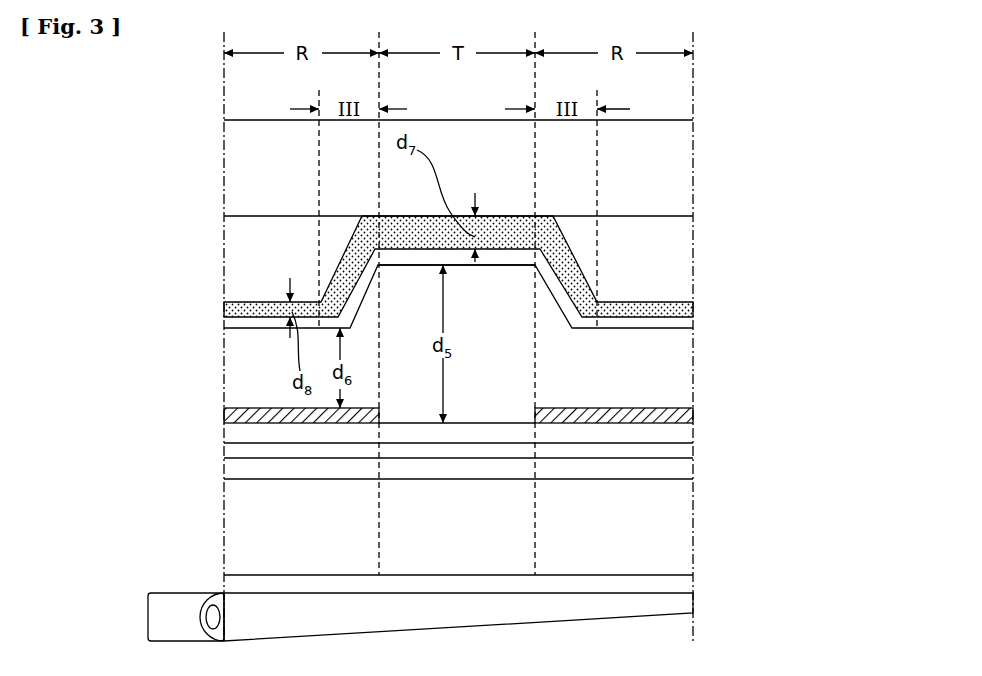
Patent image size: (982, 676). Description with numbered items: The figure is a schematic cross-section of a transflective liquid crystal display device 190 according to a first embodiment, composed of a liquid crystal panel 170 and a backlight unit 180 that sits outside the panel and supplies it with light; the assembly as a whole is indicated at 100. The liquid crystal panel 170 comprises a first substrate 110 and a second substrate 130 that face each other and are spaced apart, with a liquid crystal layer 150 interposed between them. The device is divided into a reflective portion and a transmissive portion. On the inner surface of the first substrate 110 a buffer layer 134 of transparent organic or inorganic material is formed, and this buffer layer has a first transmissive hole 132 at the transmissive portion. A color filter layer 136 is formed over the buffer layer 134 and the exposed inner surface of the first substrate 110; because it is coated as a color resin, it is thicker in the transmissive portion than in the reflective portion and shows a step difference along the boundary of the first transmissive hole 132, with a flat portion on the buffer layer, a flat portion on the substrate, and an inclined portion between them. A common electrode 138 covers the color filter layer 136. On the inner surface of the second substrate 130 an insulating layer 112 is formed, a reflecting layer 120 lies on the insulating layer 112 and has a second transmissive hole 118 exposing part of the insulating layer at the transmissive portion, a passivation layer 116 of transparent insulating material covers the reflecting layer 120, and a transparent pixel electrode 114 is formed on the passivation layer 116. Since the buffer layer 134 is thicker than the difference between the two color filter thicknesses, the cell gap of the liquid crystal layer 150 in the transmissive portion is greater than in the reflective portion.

The transflective liquid crystal display 100 is at (482, 172).
The first substrate 110 is at (504, 443).
The insulating layer 112 is at (693, 472).
The transparent pixel electrode 114 is at (693, 452).
The passivation layer 116 is at (690, 432).
The second transmissive hole 118 is at (465, 413).
The reflecting layer 120 is at (242, 406).
The second substrate 130 is at (503, 246).
The first transmissive hole 132 is at (513, 276).
The buffer layer 134 is at (268, 222).
The color filter layer 136 is at (695, 310).
The common electrode 138 is at (695, 328).
The liquid crystal layer 150 is at (223, 329).
The liquid crystal panel 170 is at (475, 347).
The backlight unit 180 is at (401, 617).
The transflective liquid crystal display device 190 is at (446, 381).